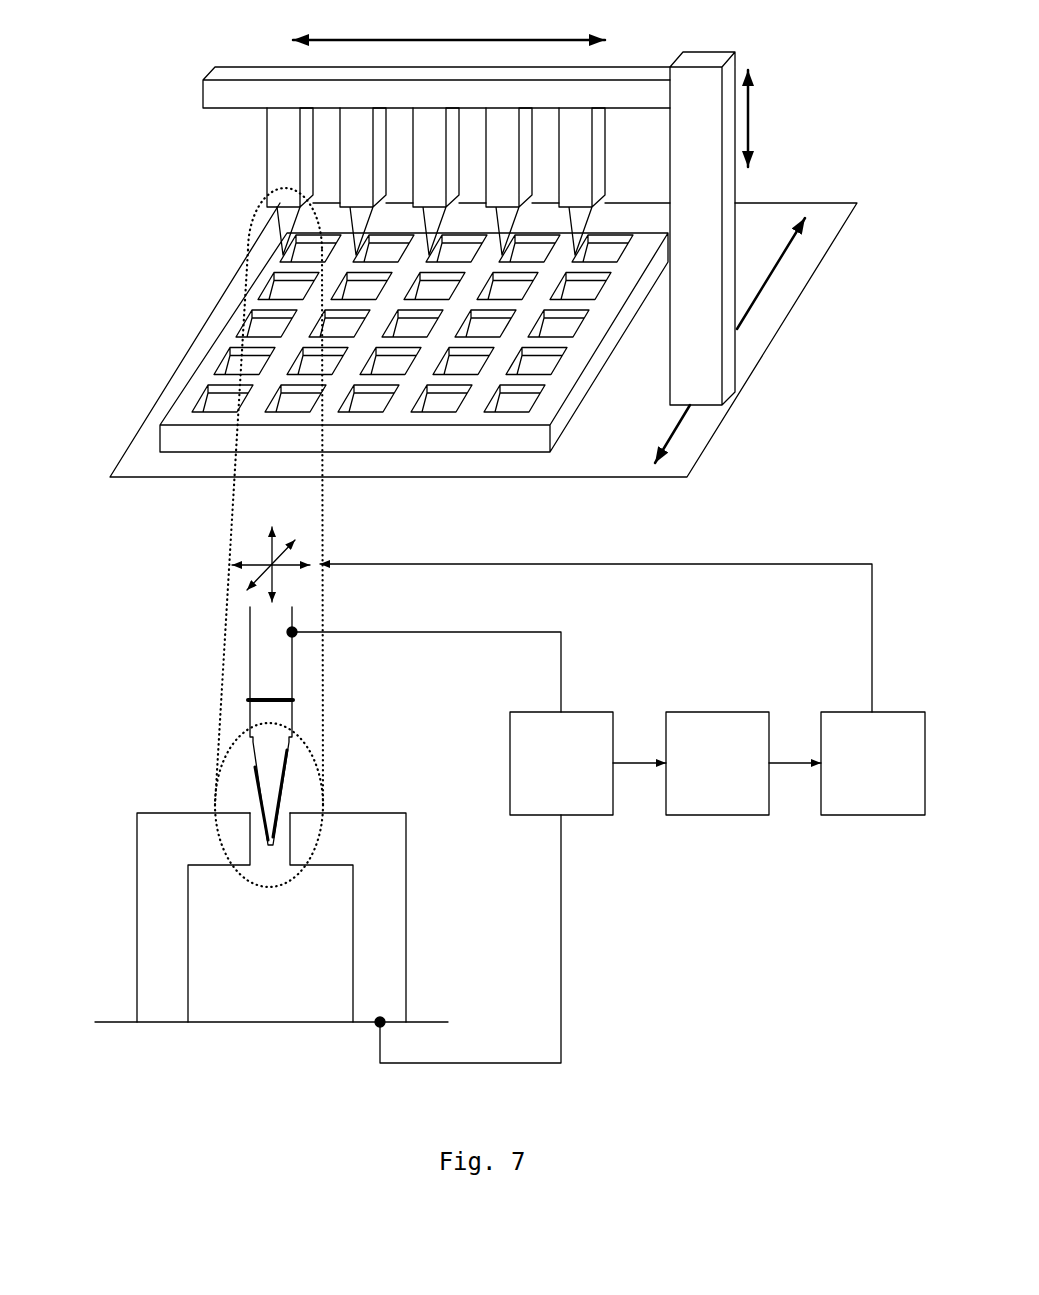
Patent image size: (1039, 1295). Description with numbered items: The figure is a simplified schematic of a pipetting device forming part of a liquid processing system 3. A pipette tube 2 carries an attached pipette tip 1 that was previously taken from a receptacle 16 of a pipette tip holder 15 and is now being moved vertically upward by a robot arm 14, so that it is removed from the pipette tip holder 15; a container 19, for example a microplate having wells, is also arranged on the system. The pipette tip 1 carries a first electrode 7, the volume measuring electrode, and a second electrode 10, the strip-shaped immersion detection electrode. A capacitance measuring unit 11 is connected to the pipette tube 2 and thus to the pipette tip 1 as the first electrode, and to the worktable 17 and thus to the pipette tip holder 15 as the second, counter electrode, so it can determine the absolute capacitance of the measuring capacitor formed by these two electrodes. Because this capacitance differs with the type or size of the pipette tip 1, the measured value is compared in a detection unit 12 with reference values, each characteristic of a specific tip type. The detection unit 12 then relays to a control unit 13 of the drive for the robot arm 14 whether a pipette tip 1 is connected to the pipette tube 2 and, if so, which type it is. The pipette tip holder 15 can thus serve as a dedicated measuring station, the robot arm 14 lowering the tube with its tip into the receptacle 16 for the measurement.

The pipette tip 1 is at (275, 218).
The pipette tube 2 is at (245, 663).
The liquid processing system 3 is at (787, 70).
The first electrode 7 is at (286, 780).
The second electrode 10 is at (256, 776).
The capacitance measuring unit 11 is at (588, 820).
The detection unit 12 is at (718, 820).
The control unit 13 is at (872, 820).
The robot arm 14 is at (702, 228).
The pipette tip holder 15 is at (130, 892).
The receptacle 16 is at (283, 815).
The worktable 17 is at (115, 1015).
The container 19 is at (518, 403).